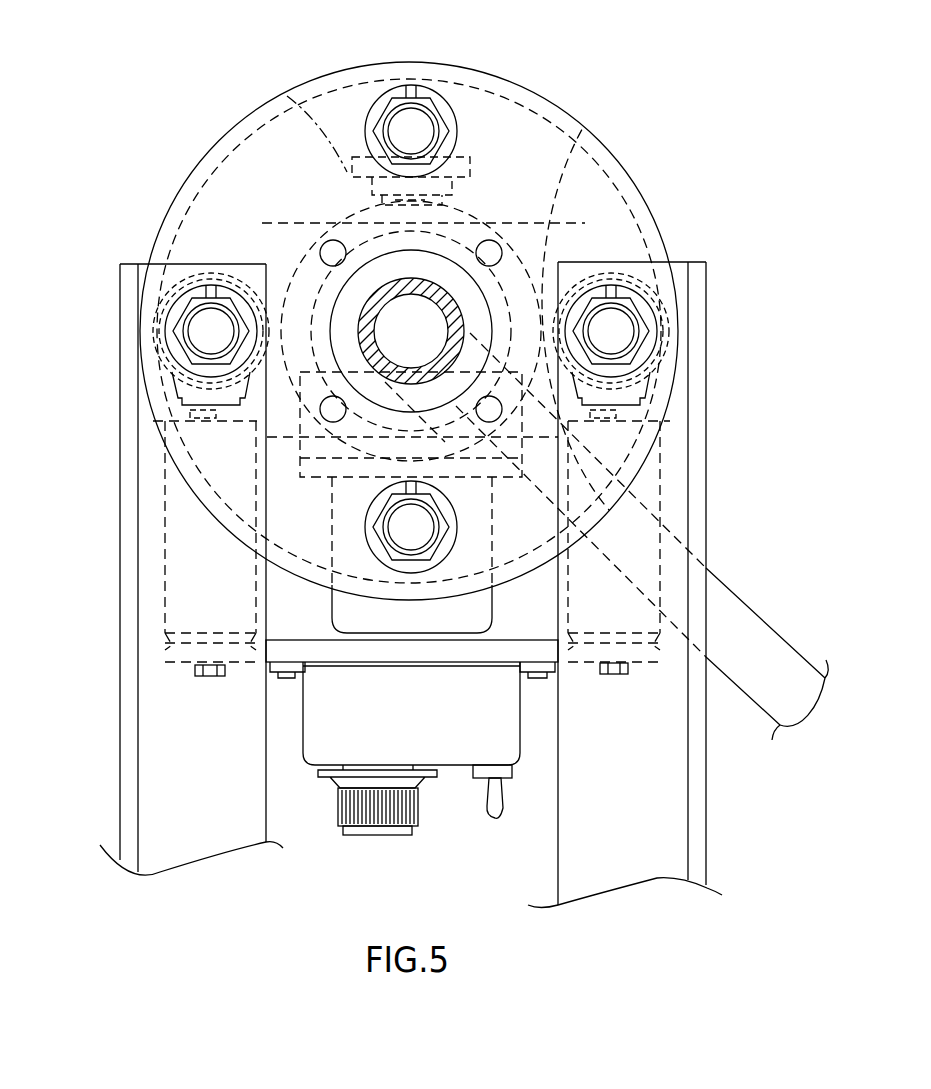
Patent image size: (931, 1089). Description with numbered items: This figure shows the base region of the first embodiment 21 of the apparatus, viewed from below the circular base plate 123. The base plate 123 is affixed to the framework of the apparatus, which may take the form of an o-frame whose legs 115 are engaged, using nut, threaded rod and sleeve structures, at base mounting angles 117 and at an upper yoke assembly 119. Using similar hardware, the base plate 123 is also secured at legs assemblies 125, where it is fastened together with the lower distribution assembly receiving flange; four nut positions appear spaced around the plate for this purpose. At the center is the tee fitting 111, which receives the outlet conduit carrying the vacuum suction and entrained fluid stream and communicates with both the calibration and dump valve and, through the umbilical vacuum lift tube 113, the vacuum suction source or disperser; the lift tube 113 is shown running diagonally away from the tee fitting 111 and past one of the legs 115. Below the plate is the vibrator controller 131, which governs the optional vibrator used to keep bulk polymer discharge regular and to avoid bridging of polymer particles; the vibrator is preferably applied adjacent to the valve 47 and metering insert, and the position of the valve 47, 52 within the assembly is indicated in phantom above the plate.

The embodiment 21 is at (423, 331).
The valve 47 is at (261, 115).
The cover ring 52 is at (287, 96).
The tee fitting 111 is at (473, 333).
The umbilical vacuum lift tube 113 is at (740, 634).
The legs 115 is at (152, 311).
The base mounting angles 117 is at (202, 820).
The upper yoke assembly 119 is at (575, 113).
The base plate 123 is at (637, 187).
The legs assemblies 125 is at (430, 127).
The vibrator controller 131 is at (433, 747).